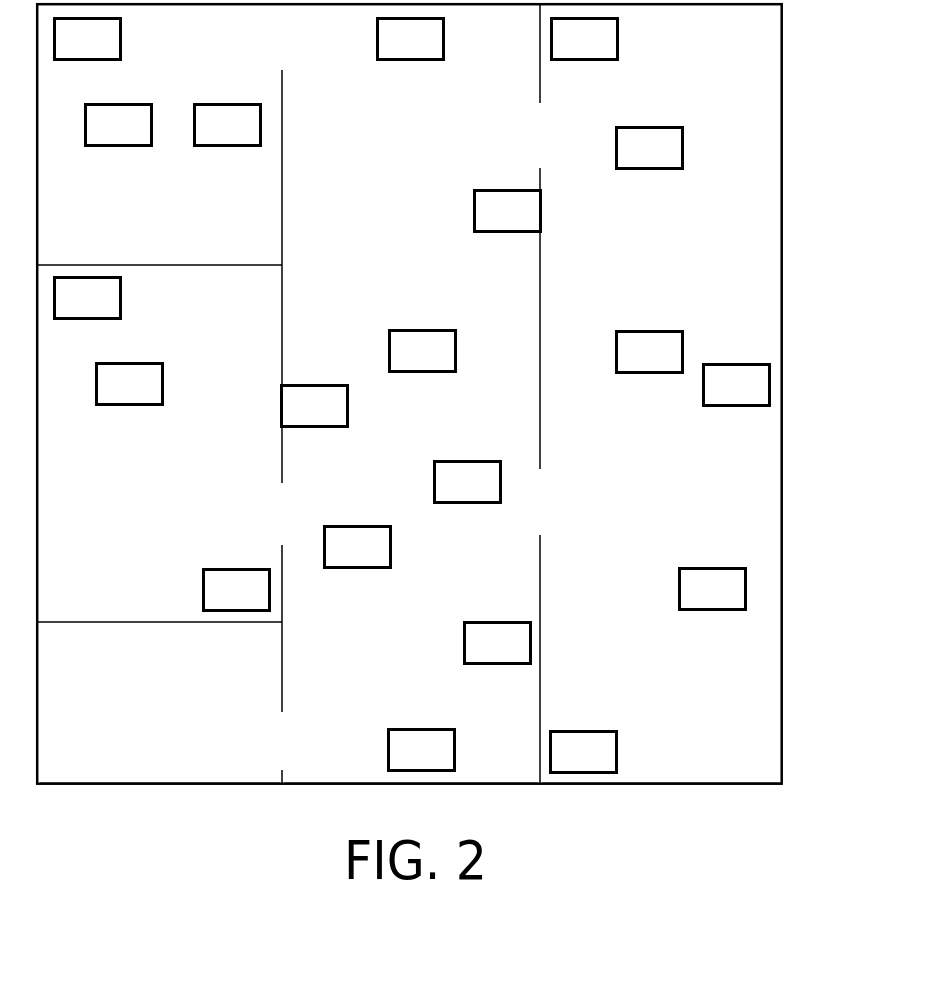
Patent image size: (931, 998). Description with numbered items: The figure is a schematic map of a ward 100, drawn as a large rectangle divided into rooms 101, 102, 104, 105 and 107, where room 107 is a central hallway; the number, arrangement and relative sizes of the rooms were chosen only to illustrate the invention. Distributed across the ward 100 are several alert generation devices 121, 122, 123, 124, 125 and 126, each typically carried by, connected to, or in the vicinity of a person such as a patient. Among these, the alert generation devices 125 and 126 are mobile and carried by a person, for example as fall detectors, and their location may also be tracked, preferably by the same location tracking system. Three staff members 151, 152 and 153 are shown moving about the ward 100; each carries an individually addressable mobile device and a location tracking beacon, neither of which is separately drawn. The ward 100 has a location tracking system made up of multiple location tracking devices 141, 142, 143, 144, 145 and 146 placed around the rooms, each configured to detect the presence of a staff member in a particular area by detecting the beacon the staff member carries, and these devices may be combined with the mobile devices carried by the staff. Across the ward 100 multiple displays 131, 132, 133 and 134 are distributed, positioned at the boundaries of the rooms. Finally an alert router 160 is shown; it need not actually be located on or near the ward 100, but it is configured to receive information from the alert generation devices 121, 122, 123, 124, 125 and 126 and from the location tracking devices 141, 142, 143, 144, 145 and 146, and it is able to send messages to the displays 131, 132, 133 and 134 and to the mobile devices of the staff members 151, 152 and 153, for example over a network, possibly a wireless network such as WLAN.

The ward 100 is at (803, 772).
The room 101 is at (54, 258).
The room 102 is at (54, 612).
The room 104 is at (54, 775).
The room 105 is at (728, 772).
The room 107 is at (484, 774).
The alert generation device 121 is at (98, 140).
The alert generation device 122 is at (109, 400).
The alert generation device 123 is at (629, 164).
The alert generation device 124 is at (629, 368).
The alert generation device 125 is at (402, 366).
The alert generation device 126 is at (447, 498).
The display 131 is at (216, 606).
The display 132 is at (716, 400).
The display 133 is at (487, 226).
The display 134 is at (294, 422).
The location tracking device 141 is at (67, 54).
The location tracking device 142 is at (67, 314).
The location tracking device 143 is at (564, 54).
The location tracking device 144 is at (563, 768).
The location tracking device 145 is at (390, 54).
The location tracking device 146 is at (401, 766).
The staff member 151 is at (207, 140).
The staff member 152 is at (337, 562).
The staff member 153 is at (692, 604).
The alert router 160 is at (477, 658).